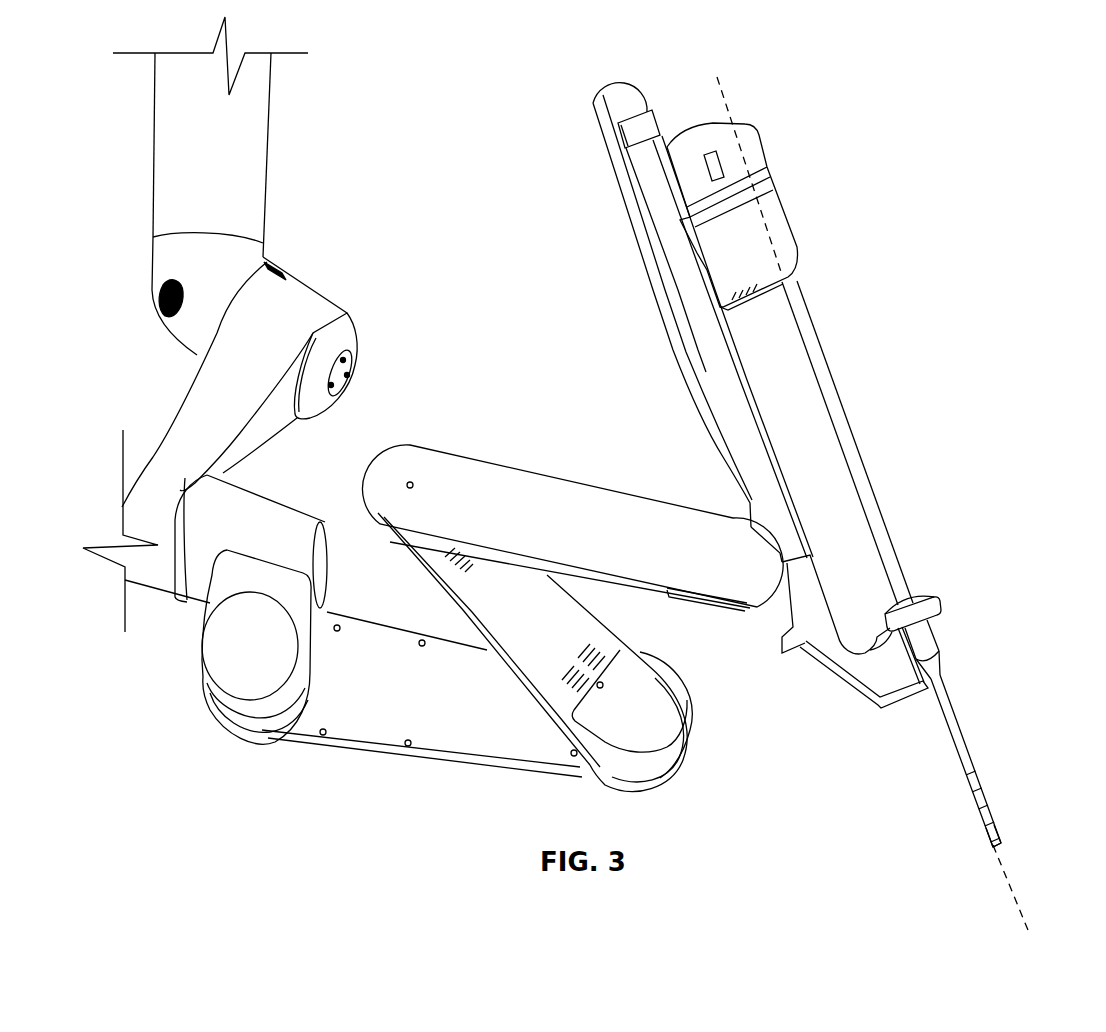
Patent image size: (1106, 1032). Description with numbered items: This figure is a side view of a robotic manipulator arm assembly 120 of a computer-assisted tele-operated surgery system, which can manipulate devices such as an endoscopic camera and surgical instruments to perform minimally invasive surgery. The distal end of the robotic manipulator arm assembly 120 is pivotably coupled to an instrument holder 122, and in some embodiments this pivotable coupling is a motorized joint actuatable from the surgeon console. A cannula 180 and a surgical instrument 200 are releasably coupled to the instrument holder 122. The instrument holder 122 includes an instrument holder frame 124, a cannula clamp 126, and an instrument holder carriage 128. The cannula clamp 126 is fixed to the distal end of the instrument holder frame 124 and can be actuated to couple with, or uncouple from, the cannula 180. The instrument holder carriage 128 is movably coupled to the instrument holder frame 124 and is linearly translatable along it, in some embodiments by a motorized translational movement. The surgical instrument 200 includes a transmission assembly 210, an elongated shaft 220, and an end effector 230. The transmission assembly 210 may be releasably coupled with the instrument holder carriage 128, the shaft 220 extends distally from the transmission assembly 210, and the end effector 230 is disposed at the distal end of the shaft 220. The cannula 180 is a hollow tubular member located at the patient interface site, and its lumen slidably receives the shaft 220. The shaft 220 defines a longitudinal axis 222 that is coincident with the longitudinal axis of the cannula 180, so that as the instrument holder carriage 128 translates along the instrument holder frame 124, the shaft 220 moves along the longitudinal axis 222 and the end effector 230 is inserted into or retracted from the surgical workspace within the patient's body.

The robotic manipulator arm assembly 120 is at (378, 178).
The instrument holder 122 is at (581, 128).
The instrument holder frame 124 is at (672, 371).
The cannula clamp 126 is at (920, 693).
The instrument holder carriage 128 is at (788, 213).
The cannula 180 is at (955, 707).
The surgical instrument 200 is at (792, 326).
The transmission assembly 210 is at (690, 114).
The elongated shaft 220 is at (849, 417).
The longitudinal axis 222 is at (765, 125).
The end effector 230 is at (984, 851).